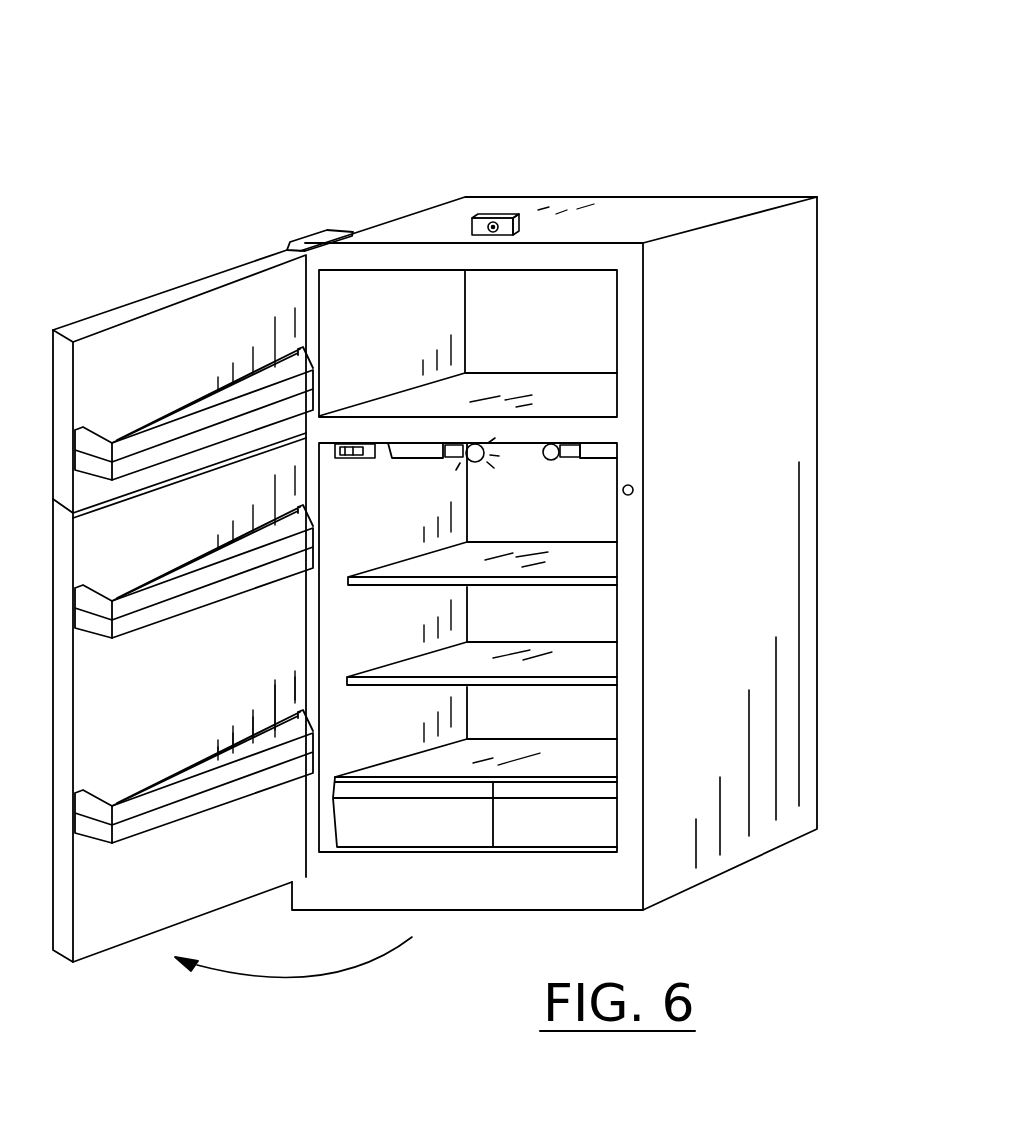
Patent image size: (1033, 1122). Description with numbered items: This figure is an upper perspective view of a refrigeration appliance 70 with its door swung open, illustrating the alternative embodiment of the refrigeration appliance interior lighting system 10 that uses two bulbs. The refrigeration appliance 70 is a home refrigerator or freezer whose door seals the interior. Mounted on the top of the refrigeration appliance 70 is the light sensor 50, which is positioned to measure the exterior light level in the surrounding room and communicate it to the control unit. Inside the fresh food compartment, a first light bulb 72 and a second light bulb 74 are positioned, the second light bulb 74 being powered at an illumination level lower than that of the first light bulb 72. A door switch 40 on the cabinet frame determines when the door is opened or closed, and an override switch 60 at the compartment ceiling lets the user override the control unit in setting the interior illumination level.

The refrigeration appliance interior lighting system 10 is at (655, 95).
The door switch 40 is at (630, 485).
The light sensor 50 is at (494, 217).
The override switch 60 is at (343, 444).
The refrigeration appliance 70 is at (605, 178).
The first light bulb 72 is at (480, 462).
The second light bulb 74 is at (558, 453).